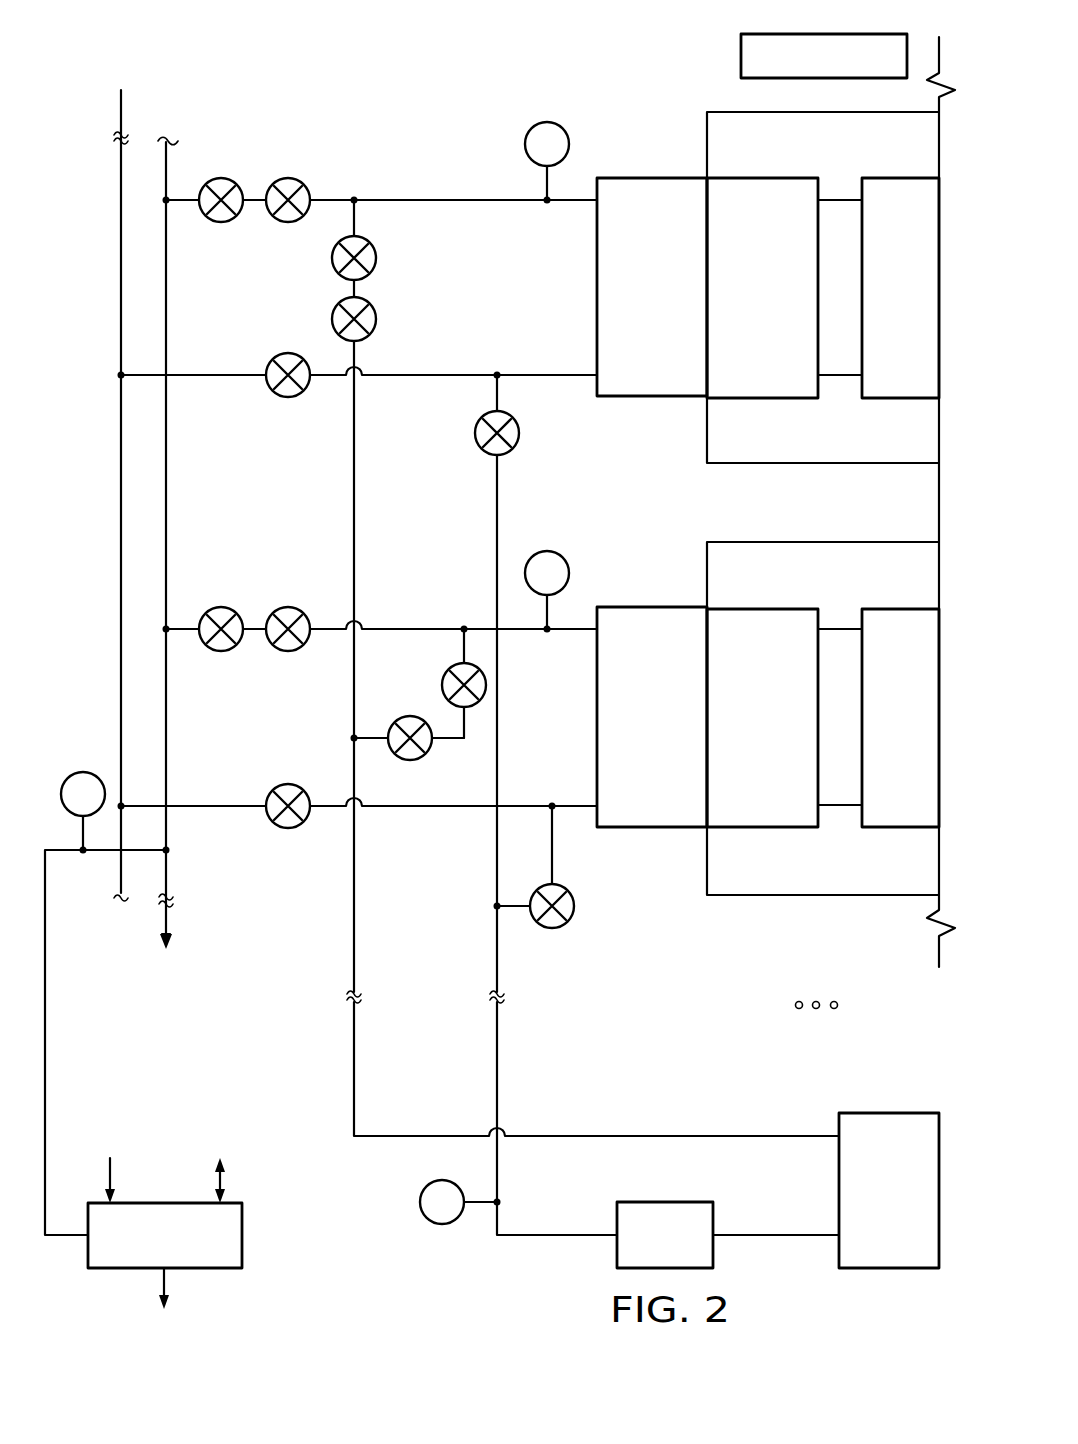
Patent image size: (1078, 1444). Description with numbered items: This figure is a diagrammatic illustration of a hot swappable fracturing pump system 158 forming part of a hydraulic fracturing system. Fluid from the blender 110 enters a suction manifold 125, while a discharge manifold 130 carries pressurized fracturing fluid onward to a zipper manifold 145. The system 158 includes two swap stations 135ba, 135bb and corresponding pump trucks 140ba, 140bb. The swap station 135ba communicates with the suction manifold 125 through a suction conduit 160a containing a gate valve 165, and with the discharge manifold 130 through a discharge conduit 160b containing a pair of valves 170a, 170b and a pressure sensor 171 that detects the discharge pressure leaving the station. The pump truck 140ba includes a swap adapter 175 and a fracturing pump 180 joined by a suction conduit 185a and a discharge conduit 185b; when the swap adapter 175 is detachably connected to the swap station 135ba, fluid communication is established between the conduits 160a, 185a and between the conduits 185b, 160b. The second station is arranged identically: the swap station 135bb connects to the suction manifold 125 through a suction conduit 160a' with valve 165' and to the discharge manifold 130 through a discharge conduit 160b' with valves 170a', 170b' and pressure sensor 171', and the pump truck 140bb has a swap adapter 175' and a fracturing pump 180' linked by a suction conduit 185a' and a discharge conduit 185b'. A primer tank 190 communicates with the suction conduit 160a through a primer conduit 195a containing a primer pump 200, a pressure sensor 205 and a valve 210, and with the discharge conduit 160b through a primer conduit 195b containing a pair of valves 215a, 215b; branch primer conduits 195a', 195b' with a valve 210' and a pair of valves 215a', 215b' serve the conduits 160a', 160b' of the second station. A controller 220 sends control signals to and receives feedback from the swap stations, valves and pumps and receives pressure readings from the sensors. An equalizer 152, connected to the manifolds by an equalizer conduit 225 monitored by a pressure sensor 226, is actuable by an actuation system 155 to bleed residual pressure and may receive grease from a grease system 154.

The blender 110 is at (120, 80).
The suction manifold 125 is at (121, 259).
The discharge manifold 130 is at (166, 288).
The swap station 135ba is at (638, 185).
The swap station 135bb is at (638, 614).
The pump truck 140ba is at (826, 466).
The pump truck 140bb is at (828, 908).
The zipper manifold 145 is at (164, 972).
The equalizer 152 is at (243, 1243).
The grease system 154 is at (110, 1125).
The actuation system 155 is at (220, 1125).
The hot swappable fracturing pump system 158 is at (367, 70).
The suction conduit 160a is at (358, 351).
The discharge conduit 160b is at (380, 175).
The suction conduit 160a' is at (358, 781).
The discharge conduit 160b' is at (380, 604).
The valve 165 is at (282, 348).
The valve 165' is at (280, 779).
The valve 170a is at (211, 172).
The valve 170b is at (295, 172).
The valve 170a' is at (210, 602).
The valve 170b' is at (297, 602).
The pressure sensor 171 is at (560, 136).
The pressure sensor 171' is at (563, 565).
The swap adapter 175 is at (762, 259).
The swap adapter 175' is at (762, 690).
The fracturing pump 180 is at (900, 259).
The fracturing pump 180' is at (900, 690).
The suction conduit 185a is at (843, 407).
The discharge conduit 185b is at (843, 168).
The suction conduit 185a' is at (843, 837).
The discharge conduit 185b' is at (843, 597).
The primer tank 190 is at (888, 1113).
The primer conduit 195a is at (664, 805).
The primer conduit 195b is at (593, 668).
The primer conduit 195a' is at (532, 941).
The primer conduit 195b' is at (422, 767).
The primer pump 200 is at (670, 1202).
The pressure sensor 205 is at (440, 1224).
The valve 210 is at (461, 431).
The valve 210' is at (575, 868).
The valve 215a is at (397, 256).
The valve 215b is at (397, 319).
The valve 215a' is at (515, 683).
The valve 215b' is at (409, 711).
The controller 220 is at (741, 55).
The equalizer conduit 225 is at (68, 1236).
The pressure sensor 226 is at (83, 772).